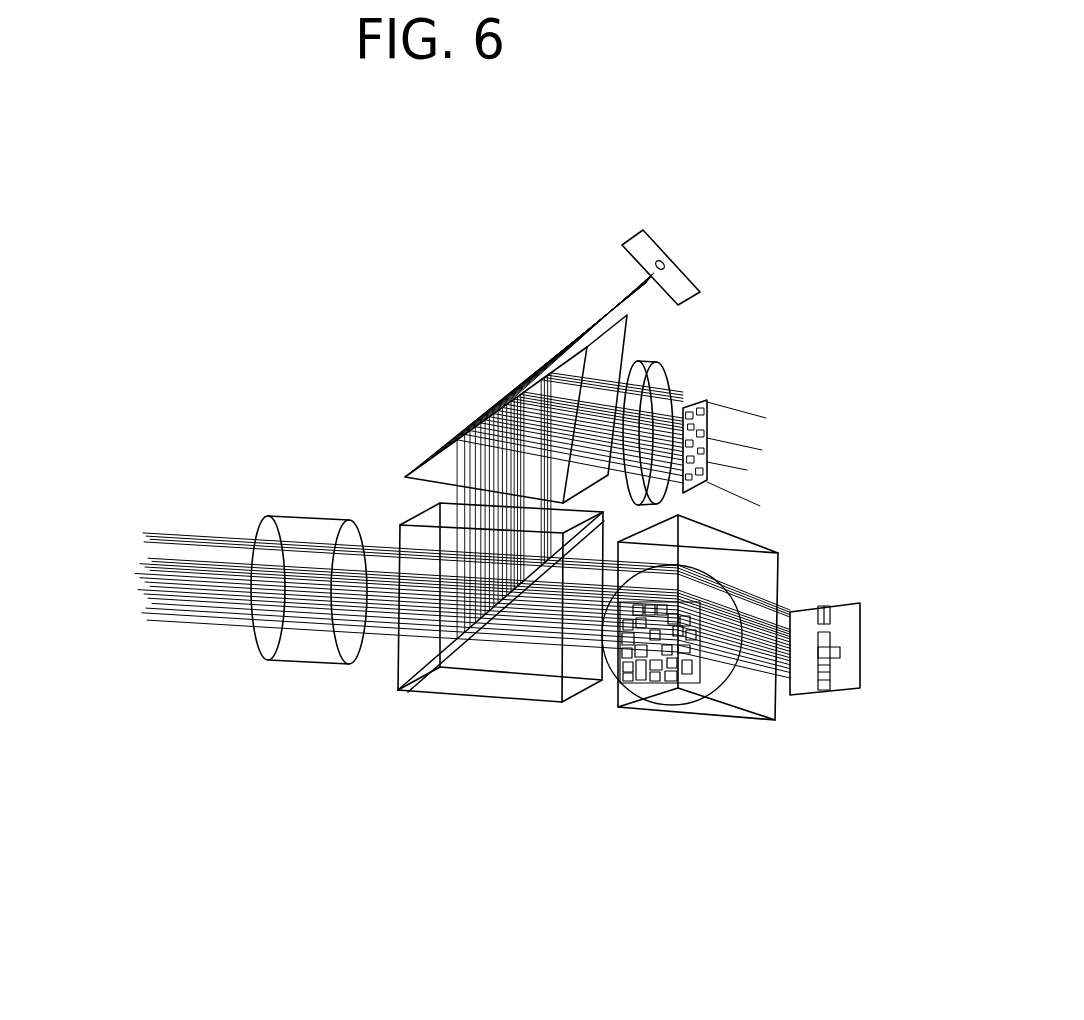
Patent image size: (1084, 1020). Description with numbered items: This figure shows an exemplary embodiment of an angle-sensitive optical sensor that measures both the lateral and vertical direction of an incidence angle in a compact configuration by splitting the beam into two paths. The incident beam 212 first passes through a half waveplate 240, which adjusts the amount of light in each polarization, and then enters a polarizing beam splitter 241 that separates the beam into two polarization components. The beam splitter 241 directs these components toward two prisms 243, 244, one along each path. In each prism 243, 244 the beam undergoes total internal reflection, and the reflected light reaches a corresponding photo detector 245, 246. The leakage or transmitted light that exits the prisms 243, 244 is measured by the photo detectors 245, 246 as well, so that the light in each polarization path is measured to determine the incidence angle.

The incident beam 212 is at (188, 535).
The half waveplate 240 is at (300, 647).
The polarizing beam splitter 241 is at (482, 685).
The prism 243 is at (773, 705).
The prism 244 is at (445, 447).
The photo detector 245 is at (707, 400).
The photo detector 246 is at (852, 605).